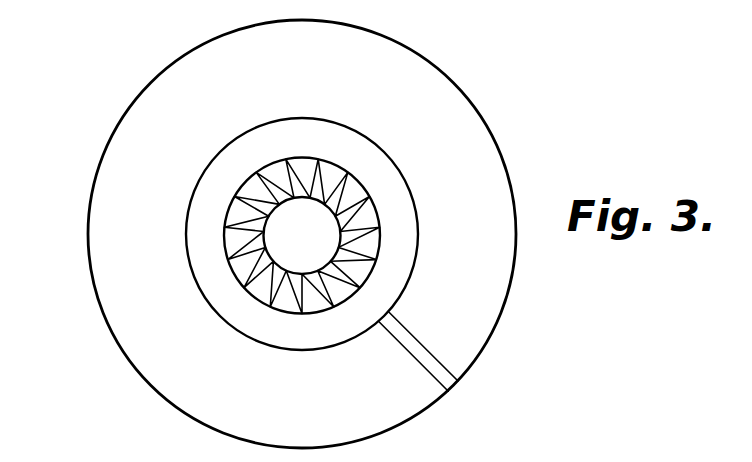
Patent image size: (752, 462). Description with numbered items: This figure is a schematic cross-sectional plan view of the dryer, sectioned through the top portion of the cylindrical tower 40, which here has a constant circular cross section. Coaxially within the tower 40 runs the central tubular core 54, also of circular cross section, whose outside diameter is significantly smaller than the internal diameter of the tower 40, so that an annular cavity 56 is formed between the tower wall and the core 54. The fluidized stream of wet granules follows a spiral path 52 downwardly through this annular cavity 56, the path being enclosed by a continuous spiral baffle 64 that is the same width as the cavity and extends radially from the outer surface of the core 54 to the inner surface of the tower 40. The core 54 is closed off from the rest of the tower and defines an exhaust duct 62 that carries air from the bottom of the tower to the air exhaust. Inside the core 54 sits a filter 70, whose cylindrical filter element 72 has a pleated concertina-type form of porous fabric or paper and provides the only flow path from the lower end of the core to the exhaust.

The tower 40 is at (506, 166).
The spiral path 52 is at (157, 120).
The central tubular core 54 is at (192, 277).
The annular cavity 56 is at (112, 230).
The exhaust duct 62 is at (398, 230).
The spiral baffle 64 is at (427, 355).
The filter 70 is at (355, 185).
The cylindrical filter element 72 is at (272, 288).